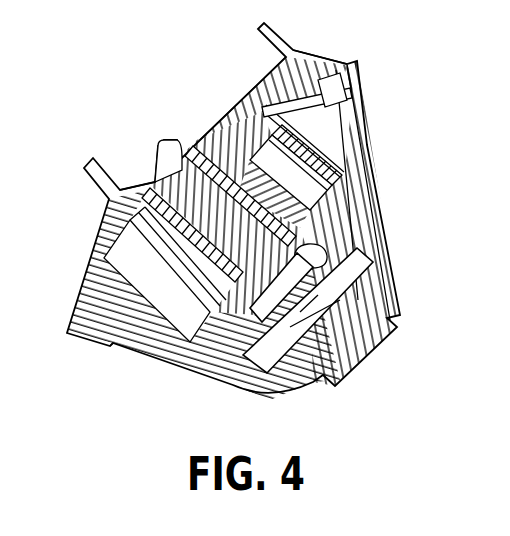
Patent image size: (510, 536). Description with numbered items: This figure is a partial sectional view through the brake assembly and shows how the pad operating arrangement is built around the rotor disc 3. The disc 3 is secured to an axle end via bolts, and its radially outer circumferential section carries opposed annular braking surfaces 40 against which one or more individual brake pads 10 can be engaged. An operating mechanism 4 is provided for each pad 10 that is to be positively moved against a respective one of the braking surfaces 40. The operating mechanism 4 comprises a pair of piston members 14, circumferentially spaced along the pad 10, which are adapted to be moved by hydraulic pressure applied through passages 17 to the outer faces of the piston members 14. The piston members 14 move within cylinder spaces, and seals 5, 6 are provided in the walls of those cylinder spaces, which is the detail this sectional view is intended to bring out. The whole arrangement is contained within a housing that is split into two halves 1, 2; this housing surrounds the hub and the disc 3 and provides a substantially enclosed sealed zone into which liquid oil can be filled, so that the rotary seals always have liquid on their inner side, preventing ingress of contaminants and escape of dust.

The housing half 1 is at (310, 386).
The housing half 2 is at (388, 298).
The rotor disc 3 is at (312, 264).
The operating mechanism 4 is at (128, 246).
The seal 5 is at (252, 120).
The seal 6 is at (226, 150).
The brake pad 10 is at (200, 135).
The piston member 14 is at (157, 275).
The passage 17 is at (348, 130).
The braking surface 40 is at (186, 165).